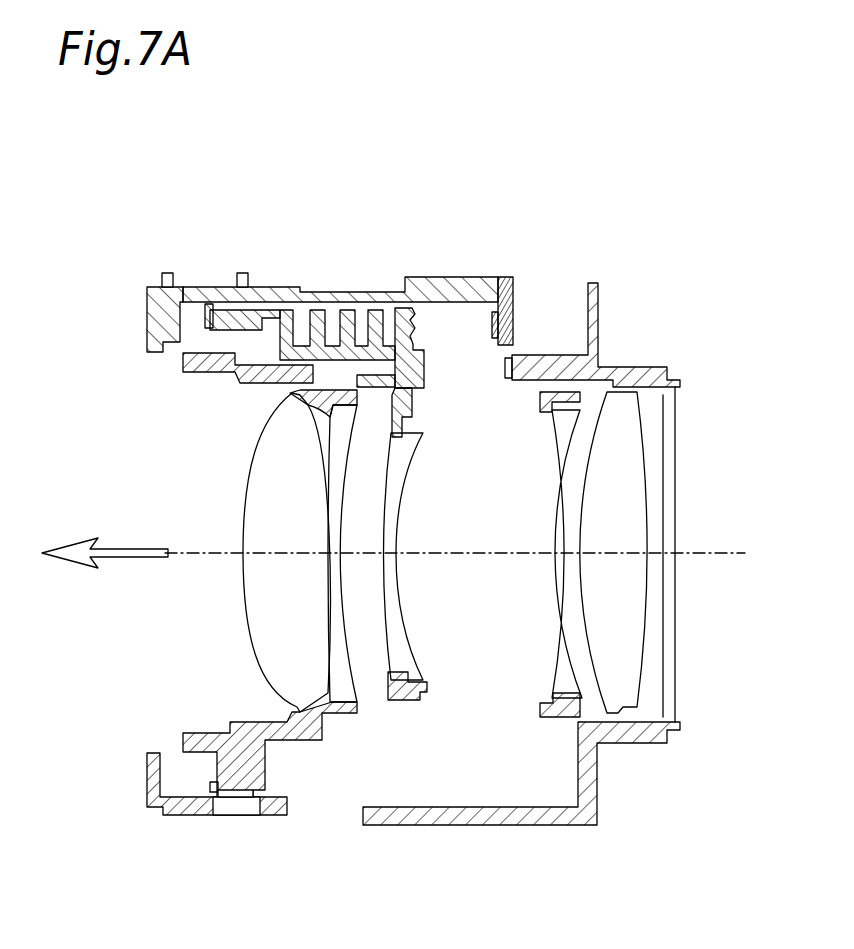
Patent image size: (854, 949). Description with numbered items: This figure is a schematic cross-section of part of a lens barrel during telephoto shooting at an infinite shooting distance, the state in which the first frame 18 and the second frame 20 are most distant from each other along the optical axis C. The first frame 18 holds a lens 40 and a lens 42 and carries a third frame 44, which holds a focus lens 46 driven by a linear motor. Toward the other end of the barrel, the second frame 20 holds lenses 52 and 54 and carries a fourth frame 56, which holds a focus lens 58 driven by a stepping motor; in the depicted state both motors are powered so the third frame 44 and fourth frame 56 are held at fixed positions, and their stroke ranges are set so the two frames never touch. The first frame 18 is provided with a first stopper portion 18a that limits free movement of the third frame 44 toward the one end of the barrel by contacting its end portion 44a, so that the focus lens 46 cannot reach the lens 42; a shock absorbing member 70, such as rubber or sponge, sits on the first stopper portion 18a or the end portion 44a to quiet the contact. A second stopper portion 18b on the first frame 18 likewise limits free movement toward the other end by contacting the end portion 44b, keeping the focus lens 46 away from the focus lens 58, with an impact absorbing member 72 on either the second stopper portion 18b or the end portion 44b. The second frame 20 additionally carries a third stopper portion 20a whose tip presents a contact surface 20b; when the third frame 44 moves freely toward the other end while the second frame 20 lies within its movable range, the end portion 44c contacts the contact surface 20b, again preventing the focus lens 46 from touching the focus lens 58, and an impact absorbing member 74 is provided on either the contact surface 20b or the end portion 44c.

The first frame 18 is at (147, 305).
The first stopper portion 18a is at (185, 303).
The second stopper portion 18b is at (505, 277).
The shock absorbing member 70 is at (205, 302).
The impact absorbing member 72 is at (492, 323).
The impact absorbing member 74 is at (508, 366).
The third frame 44 is at (297, 561).
The end portion 44a is at (218, 330).
The end portion 44b is at (415, 325).
The end portion 44c is at (418, 400).
The lens 40 is at (295, 523).
The lens 42 is at (338, 566).
The focus lens 46 is at (402, 500).
The lens 52 is at (628, 524).
The focus lens 58 is at (547, 601).
The lens 54 is at (677, 445).
The fourth frame 56 is at (543, 710).
The second frame 20 is at (600, 770).
The third stopper portion 20a is at (552, 362).
The contact surface 20b is at (512, 382).
The optical axis C is at (713, 553).